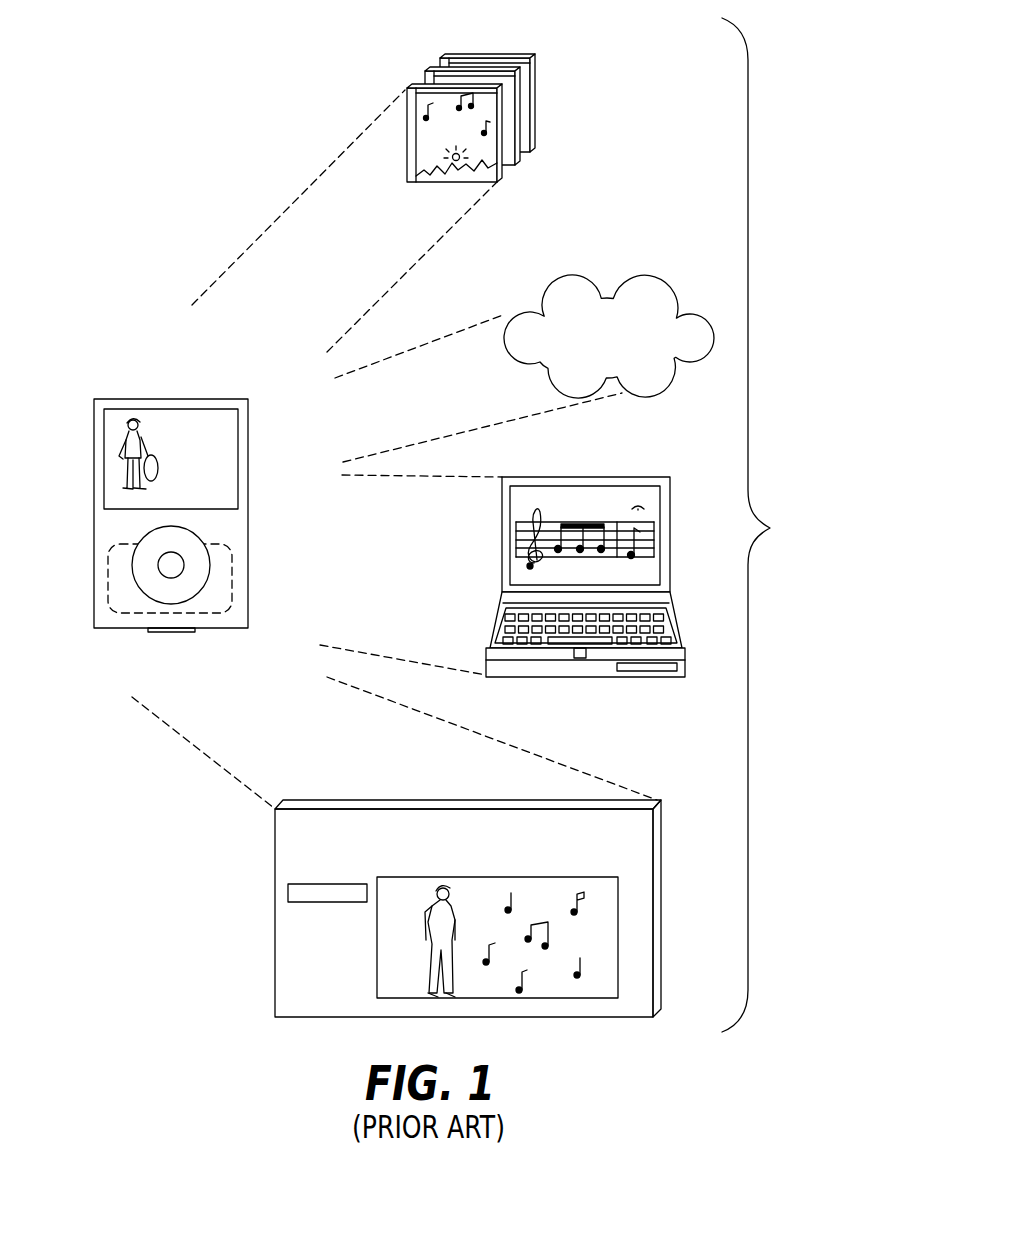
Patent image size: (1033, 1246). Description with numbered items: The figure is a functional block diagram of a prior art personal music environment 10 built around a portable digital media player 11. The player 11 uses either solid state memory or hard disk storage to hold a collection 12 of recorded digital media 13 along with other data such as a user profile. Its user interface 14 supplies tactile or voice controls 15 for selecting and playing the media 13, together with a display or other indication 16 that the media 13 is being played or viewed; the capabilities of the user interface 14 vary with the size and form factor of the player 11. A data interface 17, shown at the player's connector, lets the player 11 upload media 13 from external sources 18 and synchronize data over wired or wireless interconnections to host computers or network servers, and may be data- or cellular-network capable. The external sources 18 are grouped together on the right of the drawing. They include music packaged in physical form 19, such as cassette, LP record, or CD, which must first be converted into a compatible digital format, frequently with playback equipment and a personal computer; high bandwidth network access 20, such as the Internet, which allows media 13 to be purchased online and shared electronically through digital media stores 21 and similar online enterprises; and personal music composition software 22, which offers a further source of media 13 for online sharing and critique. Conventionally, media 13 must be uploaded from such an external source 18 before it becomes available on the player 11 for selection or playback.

The personal music environment 10 is at (175, 122).
The portable digital media player 11 is at (177, 513).
The collection 12 is at (232, 580).
The recorded digital media 13 is at (165, 433).
The user interface 14 is at (94, 508).
The controls 15 is at (146, 591).
The display or other indication 16 is at (238, 433).
The data interface 17 is at (170, 633).
The external sources 18 is at (800, 540).
The music packaged in physical form 19 is at (545, 72).
The high bandwidth network access 20 is at (668, 275).
The digital media stores 21 is at (645, 470).
The personal music composition software 22 is at (615, 775).